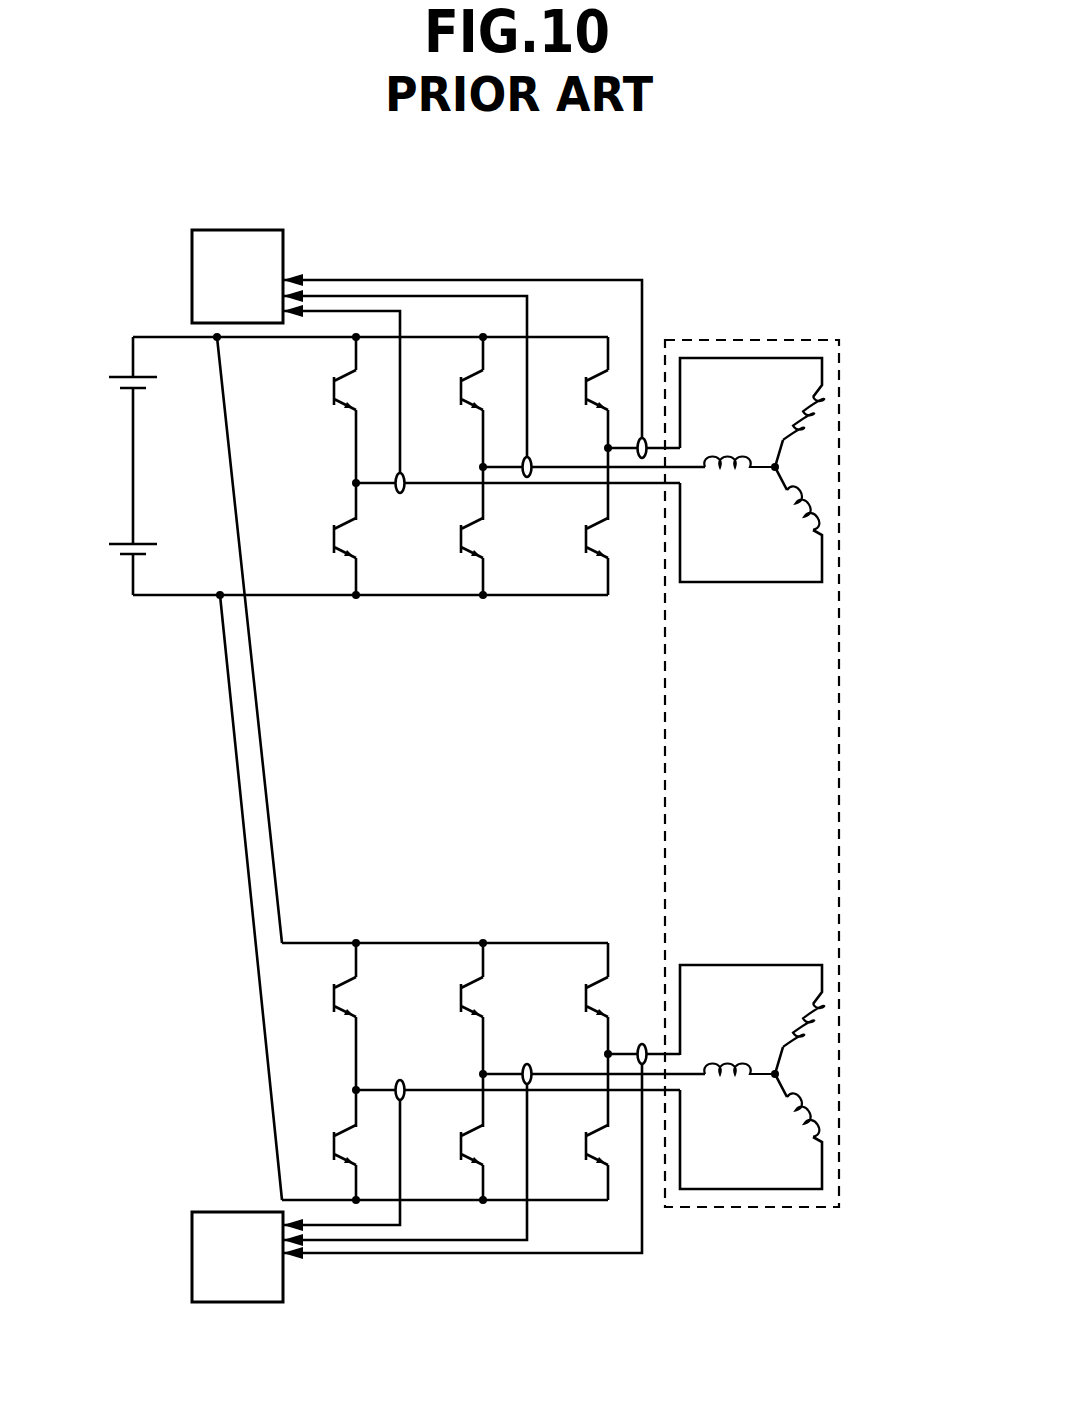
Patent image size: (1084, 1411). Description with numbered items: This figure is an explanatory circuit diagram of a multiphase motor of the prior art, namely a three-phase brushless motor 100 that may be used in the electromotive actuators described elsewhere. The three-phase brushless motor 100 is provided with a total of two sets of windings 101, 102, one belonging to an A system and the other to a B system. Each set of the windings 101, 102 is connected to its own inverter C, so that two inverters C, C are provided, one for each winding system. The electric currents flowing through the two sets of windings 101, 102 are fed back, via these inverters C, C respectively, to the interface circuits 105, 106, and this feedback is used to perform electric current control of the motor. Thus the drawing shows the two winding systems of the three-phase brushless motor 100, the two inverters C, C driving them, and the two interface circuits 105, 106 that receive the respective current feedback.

The three-phase brushless motor 100 is at (838, 314).
The winding 101 is at (813, 427).
The winding 102 is at (813, 1036).
The interface circuit 105 is at (237, 230).
The interface circuit 106 is at (191, 1240).
The inverter C is at (560, 305).